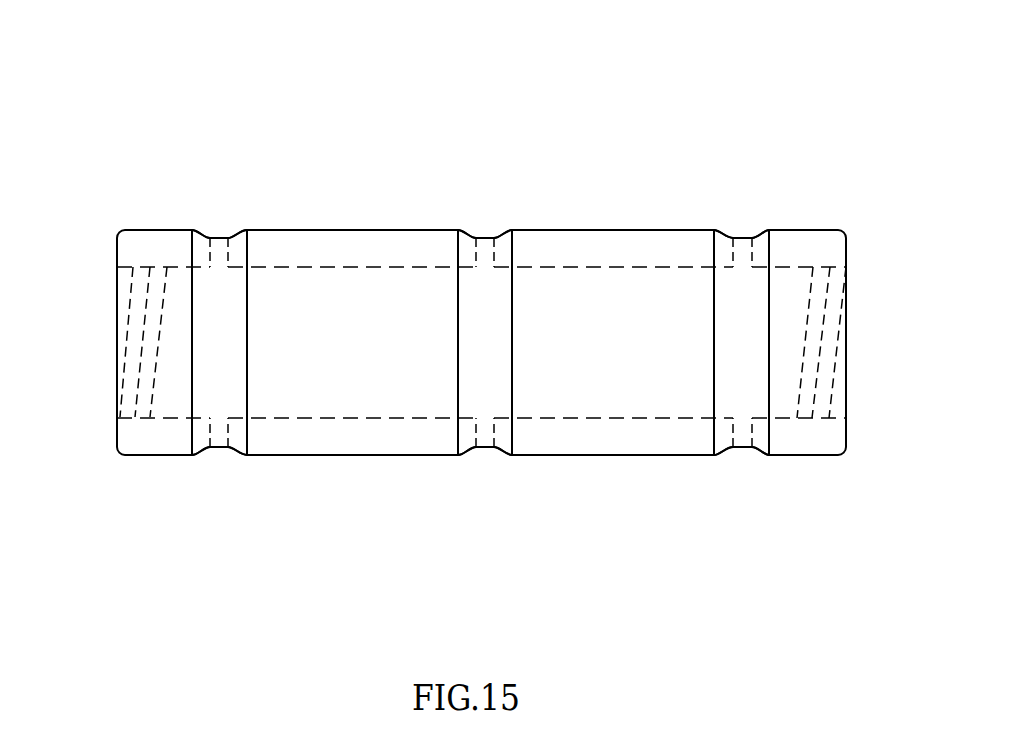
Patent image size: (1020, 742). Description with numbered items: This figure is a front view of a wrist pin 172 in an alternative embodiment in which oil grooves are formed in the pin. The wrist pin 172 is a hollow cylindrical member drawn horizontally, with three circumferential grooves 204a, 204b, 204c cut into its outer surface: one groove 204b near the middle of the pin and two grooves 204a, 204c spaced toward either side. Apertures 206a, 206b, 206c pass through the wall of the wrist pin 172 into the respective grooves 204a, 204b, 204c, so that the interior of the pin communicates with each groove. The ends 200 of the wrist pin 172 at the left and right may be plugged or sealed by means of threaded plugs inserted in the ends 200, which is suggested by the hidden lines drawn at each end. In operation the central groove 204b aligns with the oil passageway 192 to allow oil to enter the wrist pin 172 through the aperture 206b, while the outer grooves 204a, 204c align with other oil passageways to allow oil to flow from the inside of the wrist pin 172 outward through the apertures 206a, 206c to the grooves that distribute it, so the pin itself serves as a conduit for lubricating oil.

The wrist pin 172 is at (516, 108).
The ends 200 is at (100, 336).
The oil passageway 192 is at (482, 457).
The groove 204a is at (237, 233).
The groove 204b is at (470, 233).
The groove 204c is at (725, 233).
The aperture 206a is at (215, 247).
The aperture 206b is at (493, 248).
The aperture 206c is at (748, 248).